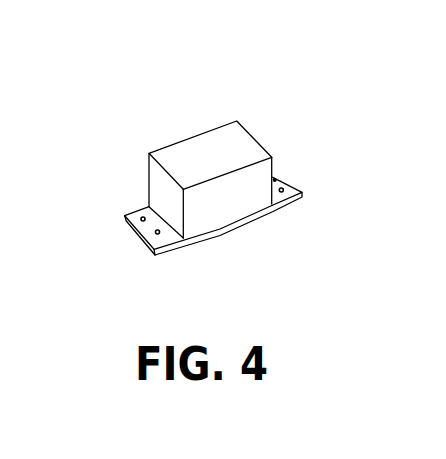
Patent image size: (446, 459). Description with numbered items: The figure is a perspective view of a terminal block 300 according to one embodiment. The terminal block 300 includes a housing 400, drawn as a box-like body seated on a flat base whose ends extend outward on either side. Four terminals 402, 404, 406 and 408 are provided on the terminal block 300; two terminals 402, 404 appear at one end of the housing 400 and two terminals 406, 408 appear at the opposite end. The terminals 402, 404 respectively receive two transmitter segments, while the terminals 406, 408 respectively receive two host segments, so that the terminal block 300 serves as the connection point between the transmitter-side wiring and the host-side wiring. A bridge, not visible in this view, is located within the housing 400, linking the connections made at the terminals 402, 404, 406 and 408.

The terminal block 300 is at (207, 101).
The housing 400 is at (256, 219).
The terminal 402 is at (141, 221).
The terminal 404 is at (156, 234).
The terminal 406 is at (275, 180).
The terminal 408 is at (284, 188).